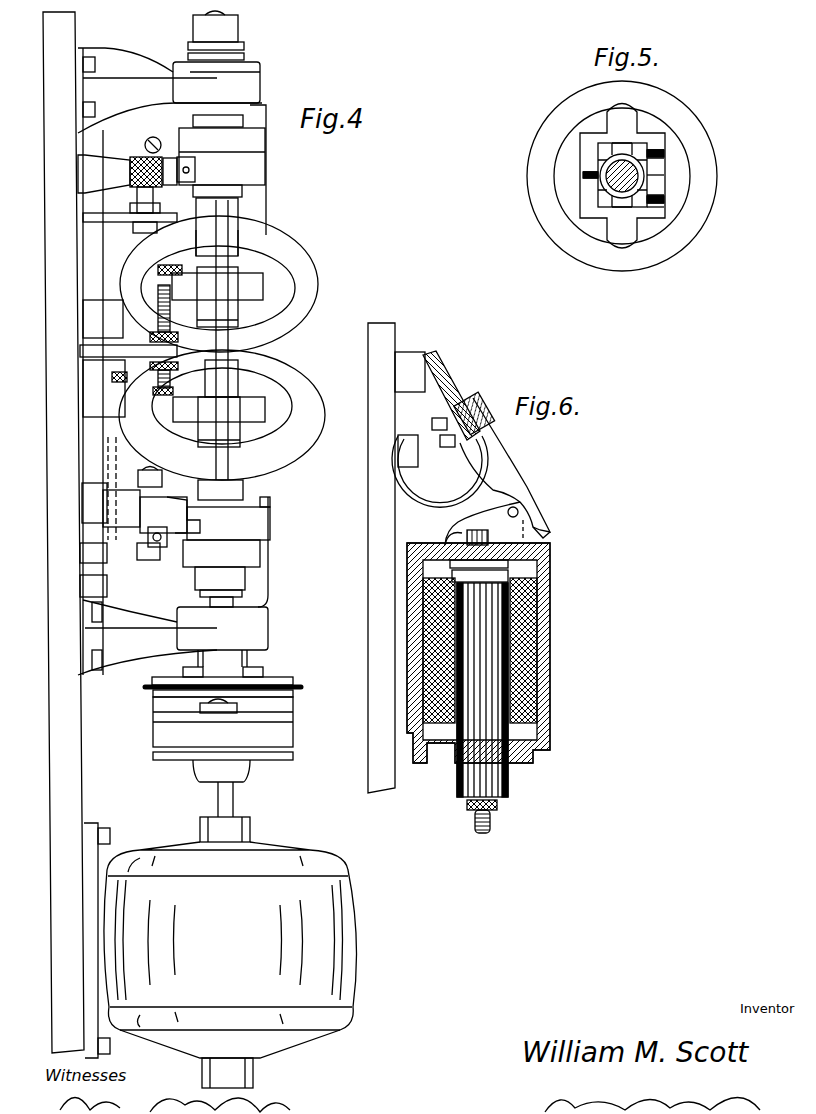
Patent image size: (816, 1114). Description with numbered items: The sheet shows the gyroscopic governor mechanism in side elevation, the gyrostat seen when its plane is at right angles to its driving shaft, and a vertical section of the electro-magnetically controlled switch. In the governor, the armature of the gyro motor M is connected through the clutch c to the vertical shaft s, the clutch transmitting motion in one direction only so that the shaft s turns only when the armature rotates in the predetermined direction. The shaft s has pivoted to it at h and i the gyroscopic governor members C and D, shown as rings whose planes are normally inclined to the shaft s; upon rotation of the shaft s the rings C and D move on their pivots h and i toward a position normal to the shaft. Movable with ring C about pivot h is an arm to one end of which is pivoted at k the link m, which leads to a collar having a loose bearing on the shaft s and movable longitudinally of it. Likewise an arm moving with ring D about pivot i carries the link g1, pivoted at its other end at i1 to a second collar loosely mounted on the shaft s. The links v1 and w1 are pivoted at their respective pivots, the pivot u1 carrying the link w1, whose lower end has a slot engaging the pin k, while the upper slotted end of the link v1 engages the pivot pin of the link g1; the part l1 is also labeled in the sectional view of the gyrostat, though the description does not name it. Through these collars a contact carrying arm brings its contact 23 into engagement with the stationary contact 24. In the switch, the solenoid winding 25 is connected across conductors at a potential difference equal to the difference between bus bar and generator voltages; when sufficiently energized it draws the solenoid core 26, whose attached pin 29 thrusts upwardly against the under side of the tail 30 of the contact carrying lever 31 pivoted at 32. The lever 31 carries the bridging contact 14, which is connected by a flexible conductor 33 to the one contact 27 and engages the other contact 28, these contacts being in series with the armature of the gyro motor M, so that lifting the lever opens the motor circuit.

In FIG. 4, the shaft s is at (233, 15).
In FIG. 5, the shaft s is at (635, 193).
In FIG. 4, the pivot i1 is at (235, 208).
In FIG. 4, the link g1 is at (197, 285).
In FIG. 5, the link g1 is at (663, 155).
In FIG. 4, the pivot i is at (243, 290).
In FIG. 5, the pivot i is at (630, 145).
In FIG. 4, the gyroscopic governor ring D is at (312, 260).
In FIG. 5, the gyroscopic governor ring D is at (532, 182).
In FIG. 4, the pivot u1 is at (203, 287).
In FIG. 4, the link w1 is at (237, 317).
In FIG. 5, the link w1 is at (590, 180).
In FIG. 4, the pivot h is at (222, 397).
In FIG. 4, the pivot pin k is at (227, 415).
In FIG. 4, the gyroscopic governor ring C is at (303, 453).
In FIG. 4, the link m is at (237, 453).
In FIG. 4, the clutch c is at (293, 725).
In FIG. 4, the gyro motor M is at (342, 955).
In FIG. 4, the contact 23 is at (140, 182).
In FIG. 4, the stationary contact 24 is at (152, 198).
In FIG. 5, the link v1 is at (665, 175).
In FIG. 5, the bearing block l1 is at (663, 200).
In FIG. 6, the contact 28 is at (423, 355).
In FIG. 6, the switch bridge 14 is at (440, 390).
In FIG. 6, the contact 27 is at (410, 453).
In FIG. 6, the flexible conductor 33 is at (447, 493).
In FIG. 6, the tail 30 is at (477, 517).
In FIG. 6, the contact carrying lever 31 is at (500, 467).
In FIG. 6, the pivot 32 is at (520, 512).
In FIG. 6, the pin 29 is at (460, 533).
In FIG. 6, the solenoid winding 25 is at (530, 657).
In FIG. 6, the solenoid core 26 is at (488, 768).